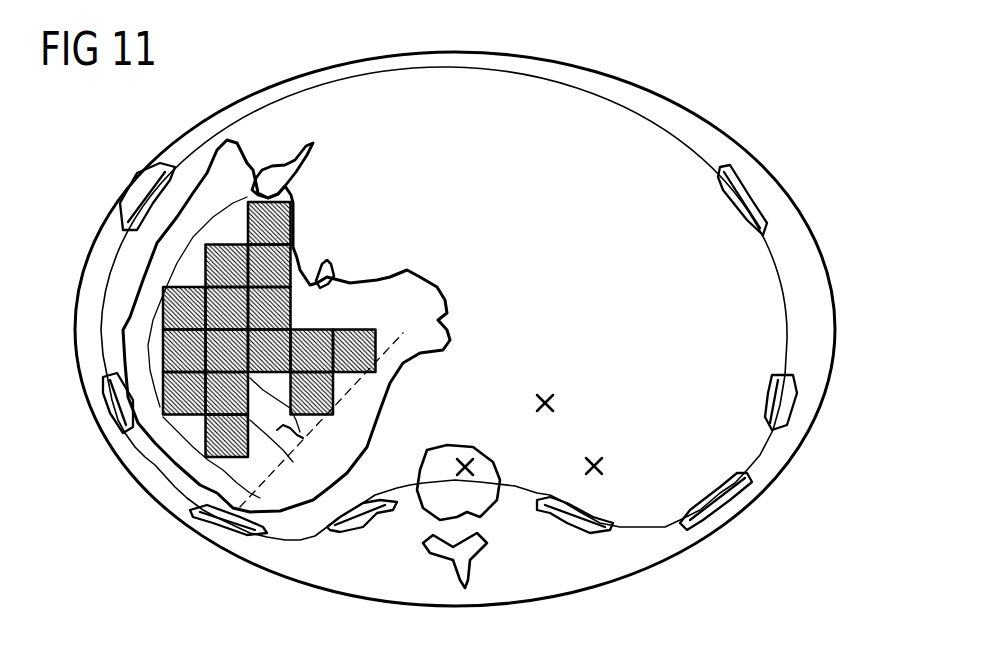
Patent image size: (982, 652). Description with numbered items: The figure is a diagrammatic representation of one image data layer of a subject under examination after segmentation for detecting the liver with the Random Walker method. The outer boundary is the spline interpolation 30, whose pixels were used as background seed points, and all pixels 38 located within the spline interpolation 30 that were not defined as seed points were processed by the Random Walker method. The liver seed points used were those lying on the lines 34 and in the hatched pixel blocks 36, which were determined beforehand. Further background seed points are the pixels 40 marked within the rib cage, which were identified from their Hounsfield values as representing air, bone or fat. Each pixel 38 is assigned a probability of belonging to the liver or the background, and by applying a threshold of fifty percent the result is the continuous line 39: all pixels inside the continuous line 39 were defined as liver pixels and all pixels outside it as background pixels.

The spline interpolation 30 is at (476, 329).
The pixels 38 is at (486, 303).
The continuous line 39 is at (322, 326).
The pixel blocks 36 is at (229, 351).
The lines 34 is at (329, 295).
The pixels 40 is at (529, 439).